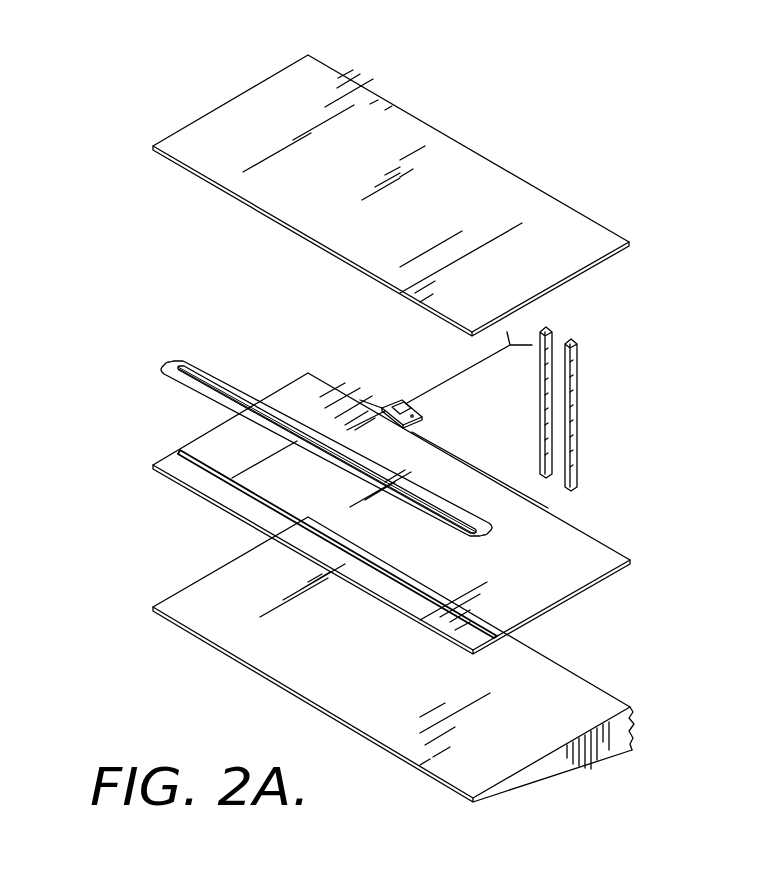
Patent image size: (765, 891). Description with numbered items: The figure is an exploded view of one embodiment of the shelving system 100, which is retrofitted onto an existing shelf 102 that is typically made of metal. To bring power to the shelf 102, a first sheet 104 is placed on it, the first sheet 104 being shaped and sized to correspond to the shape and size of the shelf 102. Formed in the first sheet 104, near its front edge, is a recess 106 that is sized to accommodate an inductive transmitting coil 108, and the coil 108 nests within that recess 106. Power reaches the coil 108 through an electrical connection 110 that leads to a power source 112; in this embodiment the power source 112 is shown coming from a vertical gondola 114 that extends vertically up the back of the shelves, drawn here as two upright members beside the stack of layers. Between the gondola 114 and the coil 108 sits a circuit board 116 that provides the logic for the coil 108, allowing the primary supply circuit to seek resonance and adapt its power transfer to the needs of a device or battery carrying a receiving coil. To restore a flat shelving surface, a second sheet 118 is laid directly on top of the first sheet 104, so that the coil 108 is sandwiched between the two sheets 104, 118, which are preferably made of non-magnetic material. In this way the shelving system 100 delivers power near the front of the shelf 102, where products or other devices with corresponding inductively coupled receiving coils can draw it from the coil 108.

The shelving system 100 is at (107, 120).
The shelf 102 is at (595, 692).
The first sheet 104 is at (587, 533).
The recess 106 is at (198, 477).
The inductive transmitting coil 108 is at (197, 362).
The electrical connection 110 is at (382, 430).
The power source 112 is at (460, 377).
The vertical gondola 114 is at (571, 327).
The circuit board 116 is at (393, 403).
The second sheet 118 is at (448, 135).